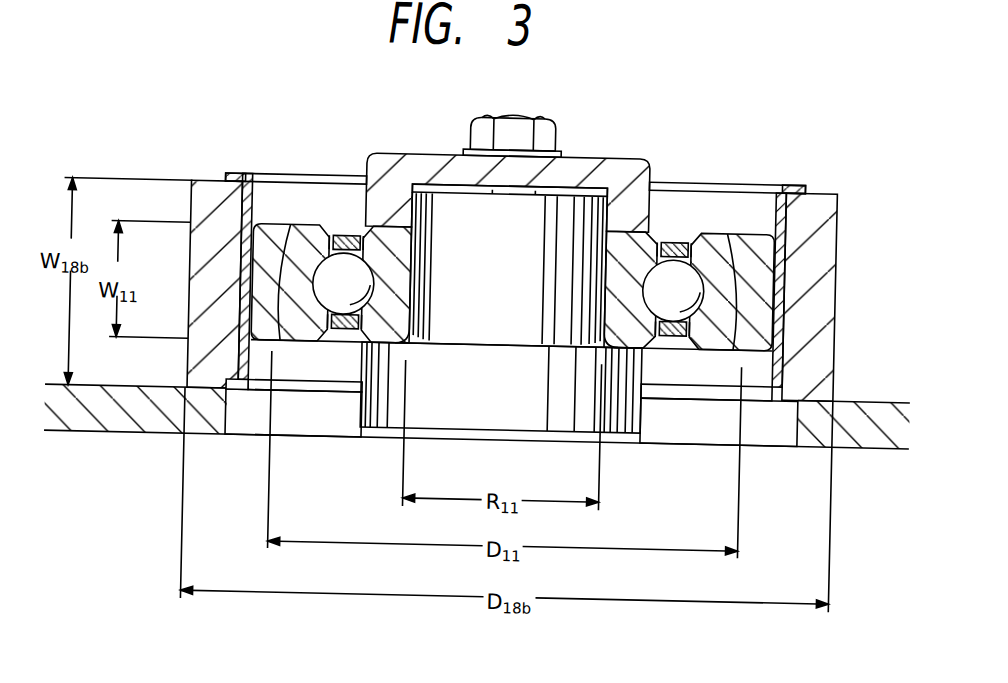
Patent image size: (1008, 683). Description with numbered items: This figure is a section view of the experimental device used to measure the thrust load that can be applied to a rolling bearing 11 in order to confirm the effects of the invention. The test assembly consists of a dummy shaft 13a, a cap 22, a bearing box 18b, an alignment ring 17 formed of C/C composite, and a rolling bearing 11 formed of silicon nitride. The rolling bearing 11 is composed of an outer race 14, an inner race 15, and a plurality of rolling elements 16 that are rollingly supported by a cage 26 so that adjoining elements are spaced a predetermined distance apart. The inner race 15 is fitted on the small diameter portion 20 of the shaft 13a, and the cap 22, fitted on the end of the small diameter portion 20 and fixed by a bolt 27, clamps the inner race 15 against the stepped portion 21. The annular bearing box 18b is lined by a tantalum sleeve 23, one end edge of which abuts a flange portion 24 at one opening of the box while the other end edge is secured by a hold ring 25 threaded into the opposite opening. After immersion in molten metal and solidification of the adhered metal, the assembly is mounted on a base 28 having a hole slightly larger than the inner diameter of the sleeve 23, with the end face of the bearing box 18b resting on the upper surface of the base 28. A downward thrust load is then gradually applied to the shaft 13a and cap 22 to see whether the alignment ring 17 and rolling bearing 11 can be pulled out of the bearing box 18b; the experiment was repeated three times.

The rolling bearing 11 is at (690, 274).
The dummy shaft 13a is at (555, 207).
The outer race 14 is at (302, 238).
The inner race 15 is at (383, 238).
The rolling elements 16 is at (673, 263).
The alignment ring 17 is at (271, 340).
The bearing box 18b is at (822, 296).
The small diameter portion 20 is at (605, 213).
The stepped portion 21 is at (659, 340).
The cap 22 is at (402, 177).
The sleeve 23 is at (773, 196).
The flange portion 24 is at (788, 394).
The hold ring 25 is at (792, 181).
The cage 26 is at (344, 343).
The bolt 27 is at (515, 132).
The base 28 is at (117, 423).